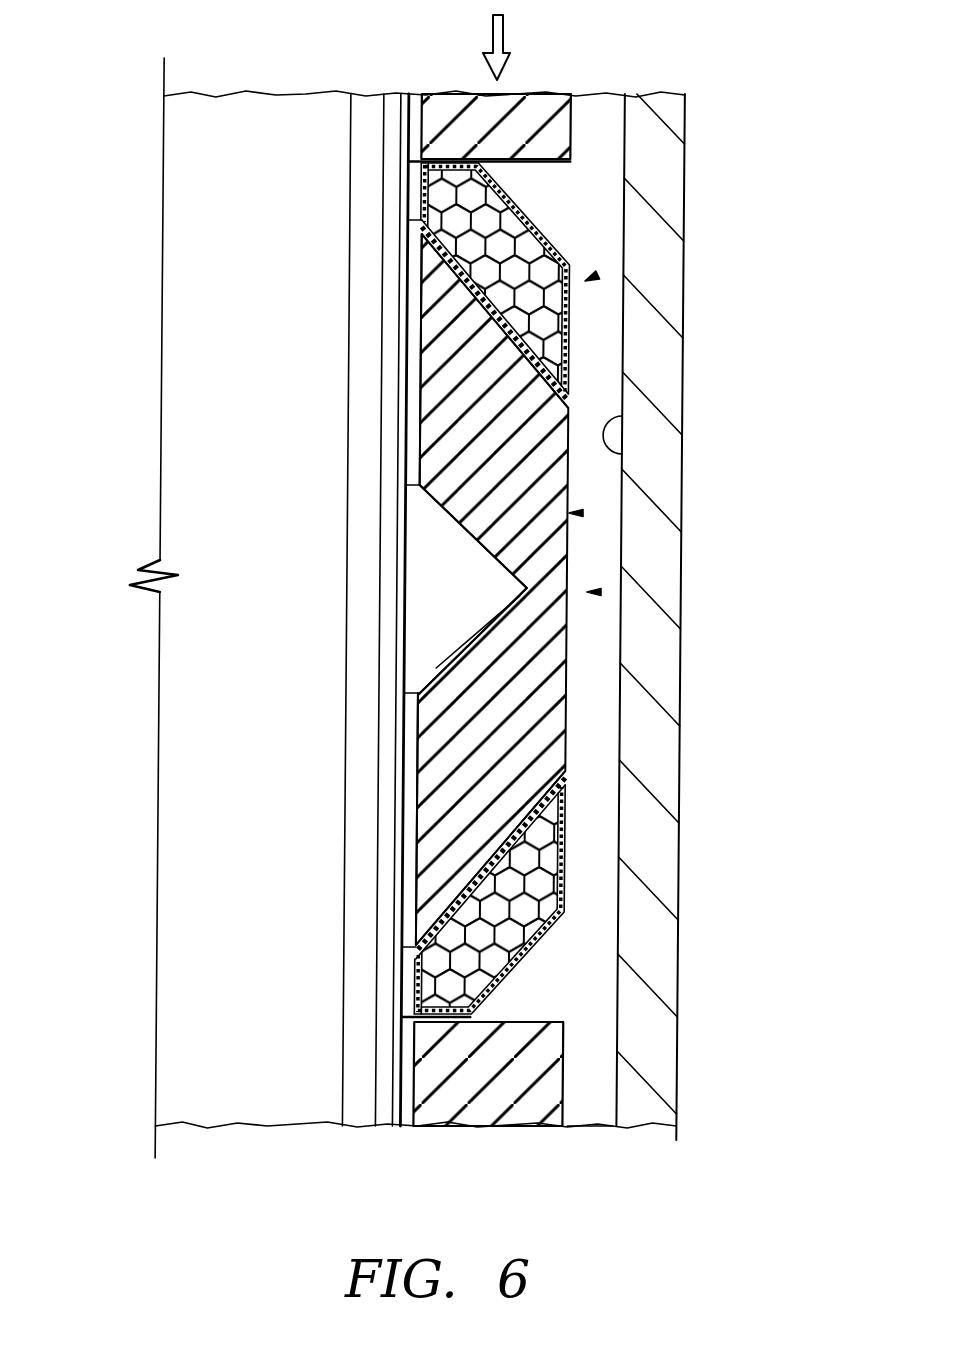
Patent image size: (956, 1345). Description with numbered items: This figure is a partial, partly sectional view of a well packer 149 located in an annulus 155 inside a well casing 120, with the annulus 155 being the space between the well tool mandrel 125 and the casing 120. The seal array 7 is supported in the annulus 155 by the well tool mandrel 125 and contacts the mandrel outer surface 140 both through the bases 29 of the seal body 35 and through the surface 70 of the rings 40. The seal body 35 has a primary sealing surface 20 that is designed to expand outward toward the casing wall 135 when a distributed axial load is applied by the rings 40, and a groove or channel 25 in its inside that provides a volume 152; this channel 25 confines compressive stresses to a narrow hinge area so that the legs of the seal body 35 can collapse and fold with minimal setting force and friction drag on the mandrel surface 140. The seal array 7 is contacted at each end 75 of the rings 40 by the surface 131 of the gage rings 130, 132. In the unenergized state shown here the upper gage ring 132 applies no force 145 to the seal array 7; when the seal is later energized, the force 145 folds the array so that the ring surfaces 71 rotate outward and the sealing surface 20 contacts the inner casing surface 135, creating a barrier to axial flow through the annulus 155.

The seal array 7 is at (598, 592).
The primary sealing surface 20 is at (570, 552).
The groove or channel 25 is at (528, 588).
The bases of legs 29 is at (420, 373).
The seal body 35 is at (575, 513).
The ring 40 is at (530, 218).
The surface of rings 70 is at (425, 193).
The surfaces of rings 71 is at (572, 331).
The end of rings 75 is at (446, 158).
The well casing 120 is at (685, 388).
The well tool mandrel 125 is at (170, 1098).
The gage ring 130 is at (495, 1104).
The surface of gage rings 131 is at (570, 161).
The upper gage ring 132 is at (517, 117).
The inner surface of outer wall / casing wall 135 is at (624, 454).
The mandrel outer surface 140 is at (403, 558).
The force 145 is at (503, 33).
The well packer 149 is at (590, 278).
The volume 152 is at (440, 538).
The annulus 155 is at (588, 1056).